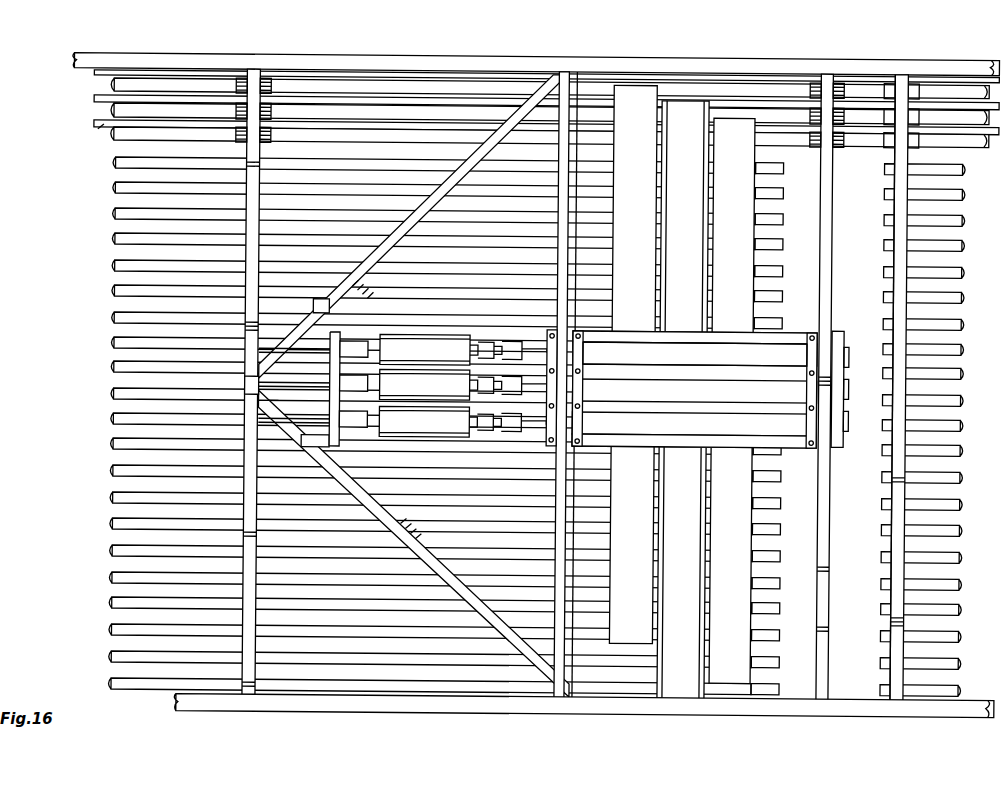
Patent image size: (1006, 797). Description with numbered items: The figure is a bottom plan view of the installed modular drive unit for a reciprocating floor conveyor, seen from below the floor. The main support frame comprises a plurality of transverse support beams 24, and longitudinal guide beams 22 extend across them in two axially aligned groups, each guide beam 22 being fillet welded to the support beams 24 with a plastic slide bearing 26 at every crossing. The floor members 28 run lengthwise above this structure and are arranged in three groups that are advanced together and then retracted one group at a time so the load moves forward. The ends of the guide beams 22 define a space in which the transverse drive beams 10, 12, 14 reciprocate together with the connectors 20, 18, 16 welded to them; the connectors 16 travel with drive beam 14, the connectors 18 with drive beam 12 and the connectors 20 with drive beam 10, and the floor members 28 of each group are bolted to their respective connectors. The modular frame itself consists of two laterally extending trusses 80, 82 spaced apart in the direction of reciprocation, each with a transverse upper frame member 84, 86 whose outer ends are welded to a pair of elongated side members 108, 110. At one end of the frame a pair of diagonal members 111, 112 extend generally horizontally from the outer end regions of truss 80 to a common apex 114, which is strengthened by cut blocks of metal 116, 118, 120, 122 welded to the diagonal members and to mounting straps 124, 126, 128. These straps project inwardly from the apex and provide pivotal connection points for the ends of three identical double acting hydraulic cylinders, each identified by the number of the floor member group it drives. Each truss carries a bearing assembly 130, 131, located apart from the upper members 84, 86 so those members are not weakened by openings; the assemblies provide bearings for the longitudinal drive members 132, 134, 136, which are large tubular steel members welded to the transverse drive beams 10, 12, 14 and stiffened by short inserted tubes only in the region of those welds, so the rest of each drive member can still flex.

The transverse drive beam 10 is at (644, 241).
The transverse drive beam 12 is at (690, 245).
The transverse drive beam 14 is at (742, 246).
The connector 16 is at (683, 150).
The connector 18 is at (733, 159).
The connector 20 is at (776, 158).
The guide beam 22 is at (118, 162).
The transverse support beam 24 is at (247, 75).
The bearing 26 is at (275, 78).
The floor member 28 is at (103, 117).
The truss 80 is at (542, 493).
The truss 82 is at (840, 578).
The transverse upper frame member 84 is at (550, 517).
The transverse upper frame member 86 is at (831, 610).
The side member 108 is at (512, 717).
The side member 110 is at (642, 53).
The diagonal member 111 is at (426, 551).
The diagonal member 112 is at (431, 234).
The apex 114 is at (248, 388).
The cut block of metal 116 is at (310, 444).
The cut block of metal 118 is at (262, 398).
The cut block of metal 120 is at (262, 357).
The cut block of metal 122 is at (330, 285).
The mounting strap 124 is at (274, 397).
The mounting strap 126 is at (274, 364).
The mounting strap 128 is at (320, 322).
The bearing assembly 130 is at (617, 327).
The bearing assembly 131 is at (846, 322).
The longitudinal drive member 132 is at (560, 441).
The longitudinal drive member 134 is at (637, 360).
The longitudinal drive member 136 is at (548, 326).